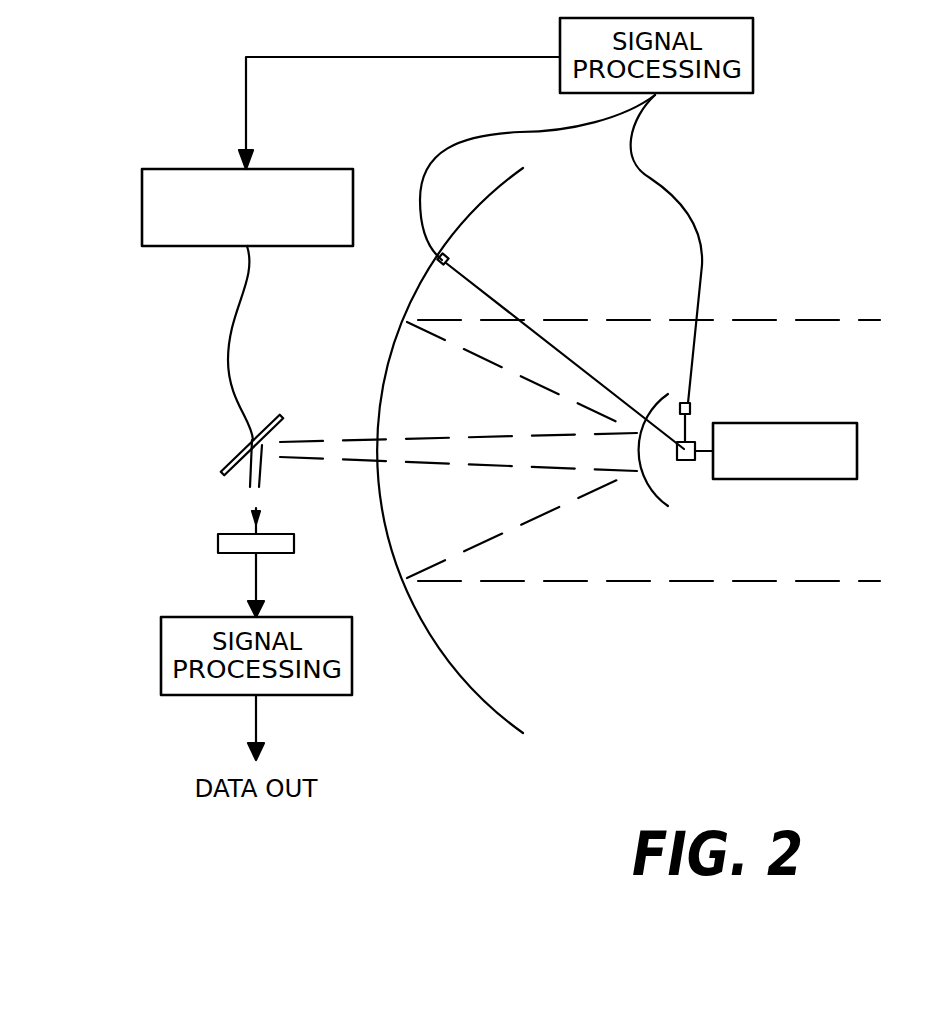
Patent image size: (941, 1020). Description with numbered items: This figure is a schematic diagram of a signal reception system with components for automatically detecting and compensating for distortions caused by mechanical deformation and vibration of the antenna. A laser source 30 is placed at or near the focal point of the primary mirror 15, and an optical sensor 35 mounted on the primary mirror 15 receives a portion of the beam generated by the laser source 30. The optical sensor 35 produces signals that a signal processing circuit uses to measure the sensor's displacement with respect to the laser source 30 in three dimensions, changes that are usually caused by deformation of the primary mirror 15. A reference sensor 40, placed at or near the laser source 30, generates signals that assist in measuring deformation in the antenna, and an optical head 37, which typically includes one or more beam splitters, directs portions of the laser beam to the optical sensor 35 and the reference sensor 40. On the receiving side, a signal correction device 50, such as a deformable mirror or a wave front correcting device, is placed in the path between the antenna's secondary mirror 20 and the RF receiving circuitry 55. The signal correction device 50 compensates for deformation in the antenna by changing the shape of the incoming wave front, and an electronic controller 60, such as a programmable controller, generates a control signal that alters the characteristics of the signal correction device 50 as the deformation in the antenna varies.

The primary mirror 15 is at (493, 714).
The secondary mirror 20 is at (660, 505).
The laser source 30 is at (823, 423).
The optical sensor 35 is at (450, 257).
The optical head 37 is at (687, 461).
The reference sensor 40 is at (690, 407).
The signal correction device 50 is at (233, 458).
The RF receiving circuitry 55 is at (218, 542).
The electronic controller 60 is at (142, 207).